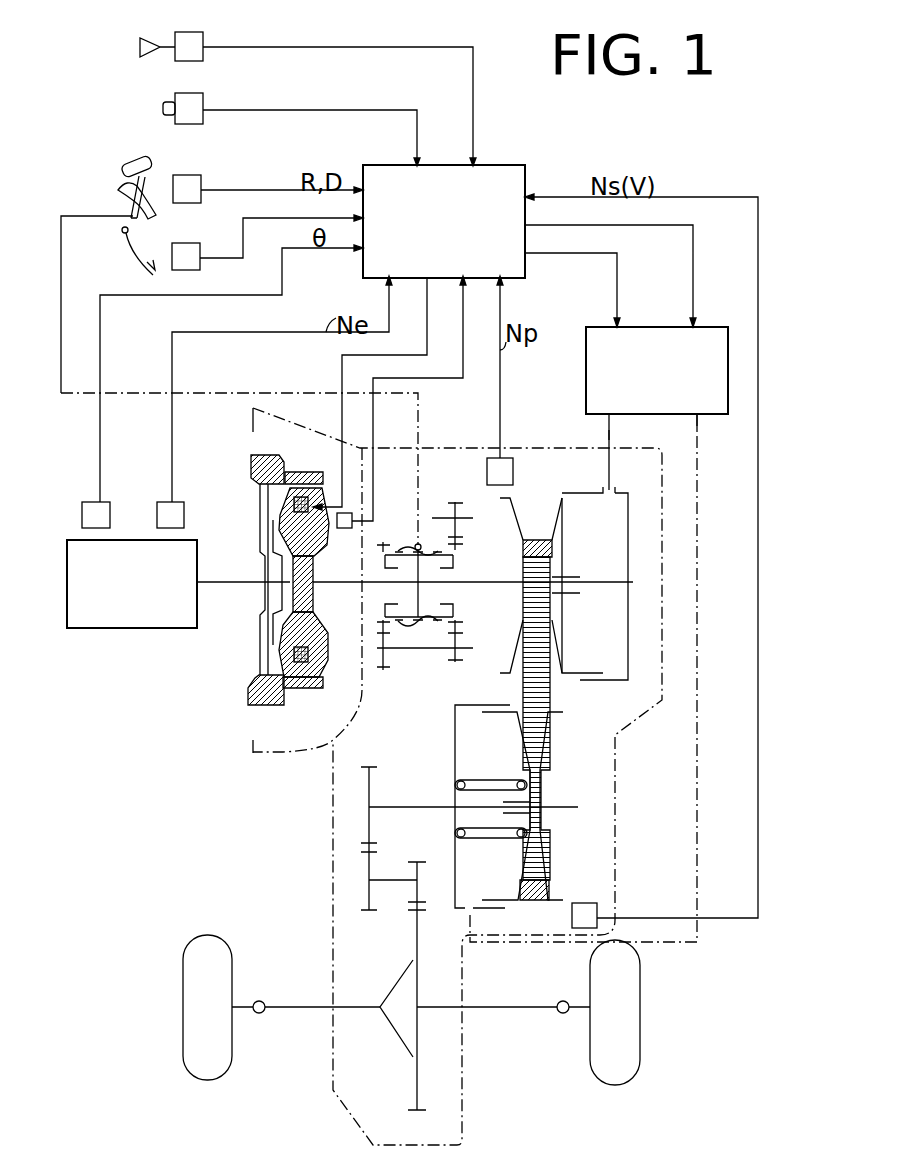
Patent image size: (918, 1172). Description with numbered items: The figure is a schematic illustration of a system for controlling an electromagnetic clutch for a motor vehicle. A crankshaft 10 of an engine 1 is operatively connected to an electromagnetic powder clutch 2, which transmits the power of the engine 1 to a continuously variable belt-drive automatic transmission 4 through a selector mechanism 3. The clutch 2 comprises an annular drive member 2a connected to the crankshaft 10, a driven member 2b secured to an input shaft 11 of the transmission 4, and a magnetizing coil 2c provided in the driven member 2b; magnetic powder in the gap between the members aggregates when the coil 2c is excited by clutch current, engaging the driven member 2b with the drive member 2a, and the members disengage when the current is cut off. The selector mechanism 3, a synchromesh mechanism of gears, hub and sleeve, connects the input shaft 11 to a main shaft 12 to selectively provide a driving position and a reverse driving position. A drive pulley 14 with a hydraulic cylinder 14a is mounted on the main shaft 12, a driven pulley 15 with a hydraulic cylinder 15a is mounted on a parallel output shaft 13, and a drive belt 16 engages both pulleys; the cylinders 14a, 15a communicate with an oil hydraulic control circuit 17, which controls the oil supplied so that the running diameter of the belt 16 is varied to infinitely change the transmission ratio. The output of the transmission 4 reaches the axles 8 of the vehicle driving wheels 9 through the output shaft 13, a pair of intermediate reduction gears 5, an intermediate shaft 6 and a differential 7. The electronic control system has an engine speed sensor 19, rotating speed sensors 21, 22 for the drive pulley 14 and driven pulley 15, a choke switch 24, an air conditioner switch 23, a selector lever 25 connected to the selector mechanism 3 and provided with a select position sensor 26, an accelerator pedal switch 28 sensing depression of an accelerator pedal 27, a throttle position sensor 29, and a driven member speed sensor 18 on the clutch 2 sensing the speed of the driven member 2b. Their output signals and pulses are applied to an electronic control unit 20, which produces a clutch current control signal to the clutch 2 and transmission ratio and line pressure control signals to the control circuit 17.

The engine 1 is at (97, 630).
The electromagnetic powder clutch 2 is at (316, 492).
The annular drive member 2a is at (251, 473).
The driven member 2b is at (315, 537).
The magnetizing coil 2c is at (313, 490).
The selector mechanism 3 is at (412, 535).
The continuously variable belt-drive automatic transmission 4 is at (577, 570).
The intermediate reduction gears 5 is at (369, 767).
The intermediate shaft 6 is at (386, 879).
The differential 7 is at (400, 982).
The axles 8 is at (302, 1005).
The vehicle driving wheels 9 is at (232, 1048).
The crankshaft 10 is at (246, 583).
The input shaft 11 is at (334, 585).
The main shaft 12 is at (503, 590).
The output shaft 13 is at (413, 801).
The drive pulley 14 is at (517, 528).
The hydraulic cylinder 14a is at (617, 554).
The driven pulley 15 is at (553, 713).
The hydraulic cylinder 15a is at (472, 730).
The drive belt 16 is at (518, 687).
The oil hydraulic control circuit 17 is at (586, 373).
The driven member speed sensor 18 is at (341, 532).
The engine speed sensor 19 is at (164, 502).
The electronic control unit 20 is at (518, 160).
The rotating speed sensor 21 is at (513, 475).
The rotating speed sensor 22 is at (599, 887).
The air conditioner switch 23 is at (203, 98).
The choke switch 24 is at (203, 36).
The selector lever 25 is at (125, 165).
The select position sensor 26 is at (201, 177).
The accelerator pedal 27 is at (129, 256).
The accelerator pedal switch 28 is at (200, 245).
The throttle position sensor 29 is at (91, 502).